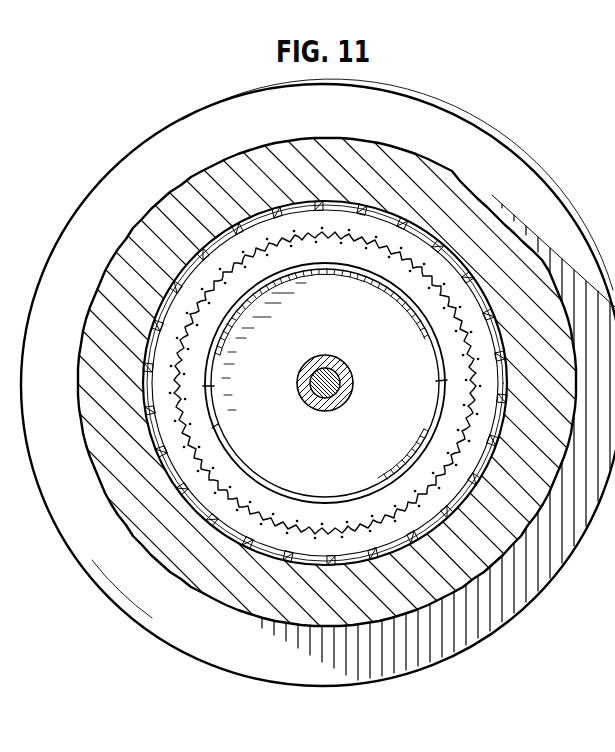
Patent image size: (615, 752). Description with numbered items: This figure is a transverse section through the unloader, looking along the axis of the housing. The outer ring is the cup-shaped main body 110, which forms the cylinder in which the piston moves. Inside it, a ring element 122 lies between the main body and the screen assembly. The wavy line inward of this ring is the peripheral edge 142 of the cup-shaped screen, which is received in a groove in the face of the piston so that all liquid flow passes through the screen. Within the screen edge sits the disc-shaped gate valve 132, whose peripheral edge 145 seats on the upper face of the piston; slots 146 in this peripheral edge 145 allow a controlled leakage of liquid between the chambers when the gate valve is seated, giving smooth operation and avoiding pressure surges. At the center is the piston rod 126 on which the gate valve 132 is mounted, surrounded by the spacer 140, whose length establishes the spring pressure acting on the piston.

The cup-shaped main body 110 is at (207, 194).
The sleeve ring 122 is at (263, 216).
The peripheral edge of the screen 142 is at (375, 243).
The gate valve 132 is at (353, 457).
The piston rod 126 is at (346, 392).
The spacer 140 is at (323, 362).
The slots 146 is at (212, 388).
The peripheral edge of the gate valve 145 is at (218, 424).